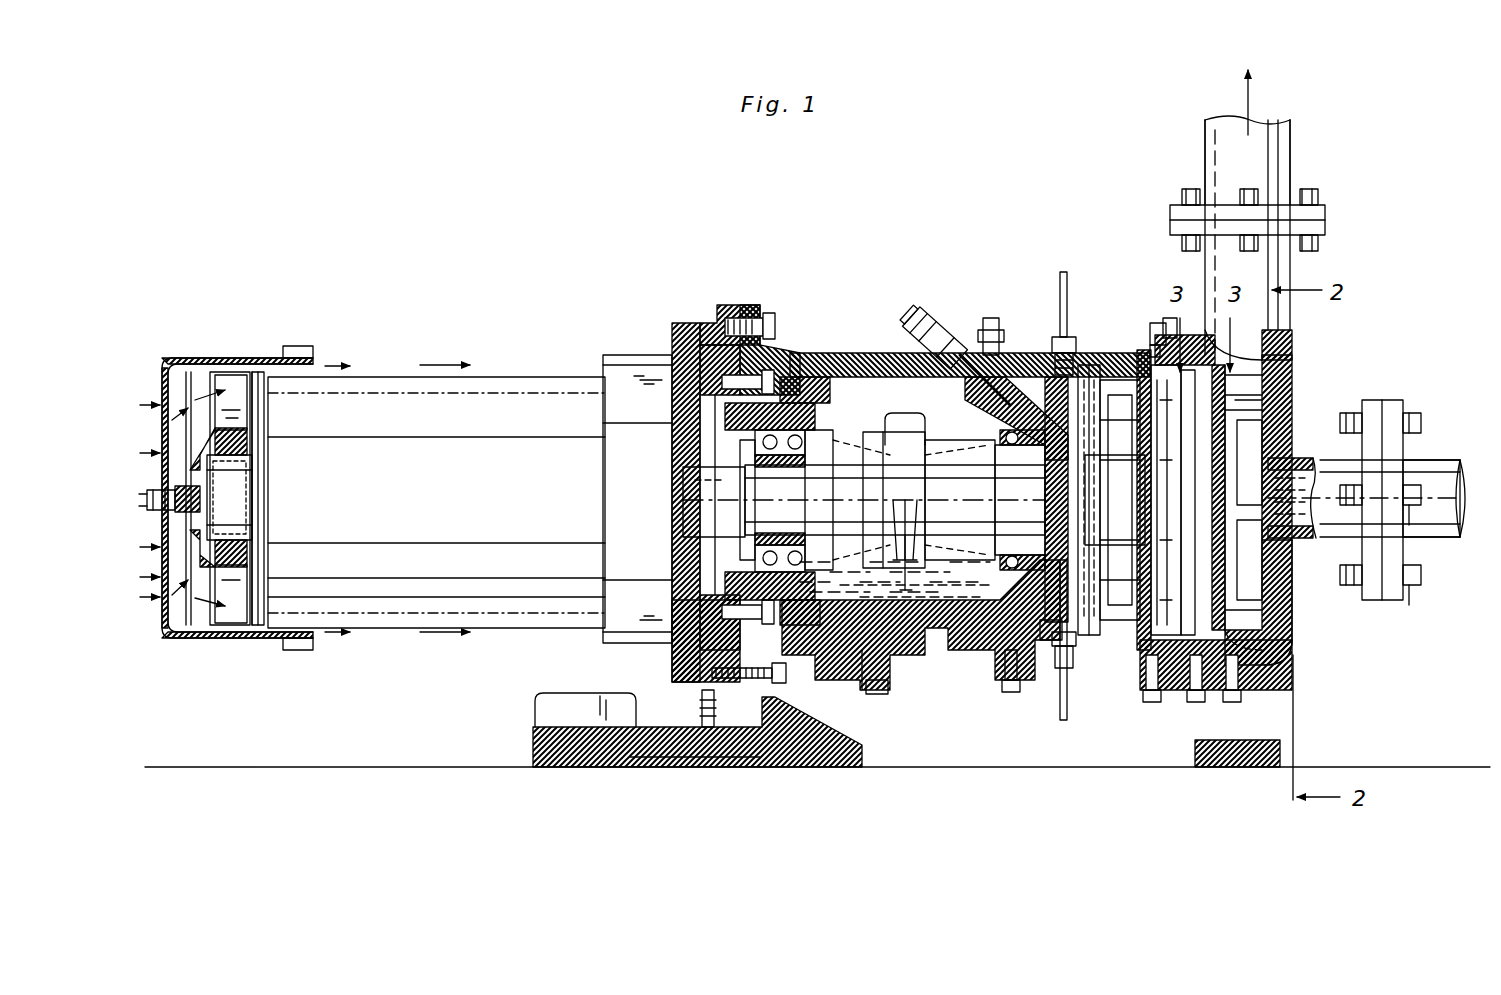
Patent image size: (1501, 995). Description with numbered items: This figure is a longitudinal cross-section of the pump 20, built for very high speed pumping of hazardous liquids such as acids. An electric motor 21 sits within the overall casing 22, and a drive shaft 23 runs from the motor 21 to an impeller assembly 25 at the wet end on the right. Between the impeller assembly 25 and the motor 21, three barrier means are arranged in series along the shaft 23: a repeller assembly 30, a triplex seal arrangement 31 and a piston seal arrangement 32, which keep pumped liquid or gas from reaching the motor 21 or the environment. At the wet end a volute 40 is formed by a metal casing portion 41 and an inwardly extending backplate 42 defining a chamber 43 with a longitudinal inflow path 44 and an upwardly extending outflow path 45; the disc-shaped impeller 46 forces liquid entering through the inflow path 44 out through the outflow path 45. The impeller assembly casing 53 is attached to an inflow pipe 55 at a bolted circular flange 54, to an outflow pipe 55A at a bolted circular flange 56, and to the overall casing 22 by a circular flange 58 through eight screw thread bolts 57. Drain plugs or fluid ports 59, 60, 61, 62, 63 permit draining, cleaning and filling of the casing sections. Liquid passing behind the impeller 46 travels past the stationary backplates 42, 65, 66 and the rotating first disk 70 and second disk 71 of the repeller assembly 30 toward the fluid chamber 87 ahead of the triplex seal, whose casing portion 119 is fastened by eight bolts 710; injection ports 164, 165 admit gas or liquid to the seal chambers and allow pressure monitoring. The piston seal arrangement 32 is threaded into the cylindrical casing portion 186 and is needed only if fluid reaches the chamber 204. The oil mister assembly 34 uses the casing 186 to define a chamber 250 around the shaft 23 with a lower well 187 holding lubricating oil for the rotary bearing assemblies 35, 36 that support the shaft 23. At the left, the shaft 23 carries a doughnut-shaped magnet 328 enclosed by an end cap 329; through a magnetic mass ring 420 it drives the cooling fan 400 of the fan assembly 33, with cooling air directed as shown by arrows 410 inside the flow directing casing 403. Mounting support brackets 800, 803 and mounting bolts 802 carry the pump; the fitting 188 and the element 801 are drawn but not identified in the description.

The pump 20 is at (657, 276).
The electric motor 21 is at (462, 503).
The overall casing 22 is at (381, 377).
The drive shaft means 23 is at (700, 520).
The impeller assembly 25 is at (1285, 617).
The repeller assembly 30 is at (1135, 660).
The triplex seal arrangement 31 is at (1112, 410).
The piston seal arrangement 32 is at (1040, 430).
The fan assembly 33 is at (213, 388).
The oil mister assembly 34 is at (885, 404).
The rotary bearing assembly 35 is at (892, 398).
The rotary bearing assembly 36 is at (822, 432).
The volute 40 is at (1292, 272).
The metal casing portion 41 is at (1288, 586).
The backplate 42 is at (1283, 550).
The chamber 43 is at (1282, 648).
The inflow path 44 is at (1465, 493).
The outflow path 45 is at (1252, 100).
The impeller 46 is at (1270, 430).
The impeller assembly casing 53 is at (1292, 356).
The circular flange 54 is at (1380, 400).
The inflow pipe 55 is at (1432, 540).
The outflow pipe 55A is at (1292, 150).
The circular flange 56 is at (1327, 226).
The screw thread bolts 57 is at (1160, 340).
The circular flange 58 is at (1168, 338).
The drain plug 59 is at (1232, 702).
The drain plug 60 is at (1196, 694).
The drain plug 61 is at (1152, 694).
The drain plug 62 is at (1010, 692).
The drain plug 63 is at (890, 690).
The stationary body backplate 65 is at (1152, 366).
The stationary body backplate 66 is at (1070, 620).
The first disk 70 is at (1248, 402).
The second disk 71 is at (1173, 541).
The fluid chamber 87 is at (1122, 496).
The casing portion 119 is at (1087, 352).
The injection port 164 is at (1048, 650).
The injection port 165 is at (1048, 385).
The cylindrical casing portion 186 is at (858, 362).
The lower well 187 is at (921, 629).
The fitting 188 is at (932, 320).
The chamber 204 is at (1010, 395).
The chamber 250 is at (838, 408).
The doughnut-shaped magnet 328 is at (243, 478).
The end cap 329 is at (208, 545).
The cooling fan 400 is at (208, 388).
The flow directing casing 403 is at (258, 365).
The arrows 410 is at (245, 390).
The inset encircling ring 420 is at (248, 432).
The bolts 710 is at (975, 353).
The mounting support bracket 800 is at (862, 752).
The bolt 801 is at (704, 712).
The mounting bolts 802 is at (786, 674).
The mounting support bracket 803 is at (1282, 742).